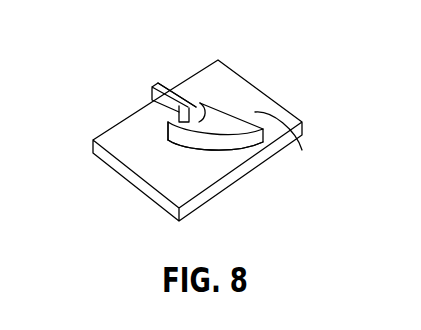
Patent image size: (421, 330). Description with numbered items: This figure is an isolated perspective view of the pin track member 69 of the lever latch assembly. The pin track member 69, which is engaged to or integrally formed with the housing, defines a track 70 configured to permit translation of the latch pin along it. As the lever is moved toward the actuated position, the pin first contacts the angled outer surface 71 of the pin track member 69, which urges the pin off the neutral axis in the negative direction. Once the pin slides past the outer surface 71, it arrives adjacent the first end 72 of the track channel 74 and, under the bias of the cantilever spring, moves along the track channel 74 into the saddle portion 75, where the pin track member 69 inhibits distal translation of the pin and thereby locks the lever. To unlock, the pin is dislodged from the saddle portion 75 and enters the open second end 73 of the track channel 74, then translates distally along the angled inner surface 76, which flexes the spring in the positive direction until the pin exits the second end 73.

The pin track member 69 is at (304, 137).
The track 70 is at (160, 129).
The outer surface 71 is at (181, 156).
The first end 72 is at (160, 115).
The open second end 73 is at (192, 101).
The track channel 74 is at (190, 119).
The saddle portion 75 is at (207, 110).
The inner surface 76 is at (242, 105).